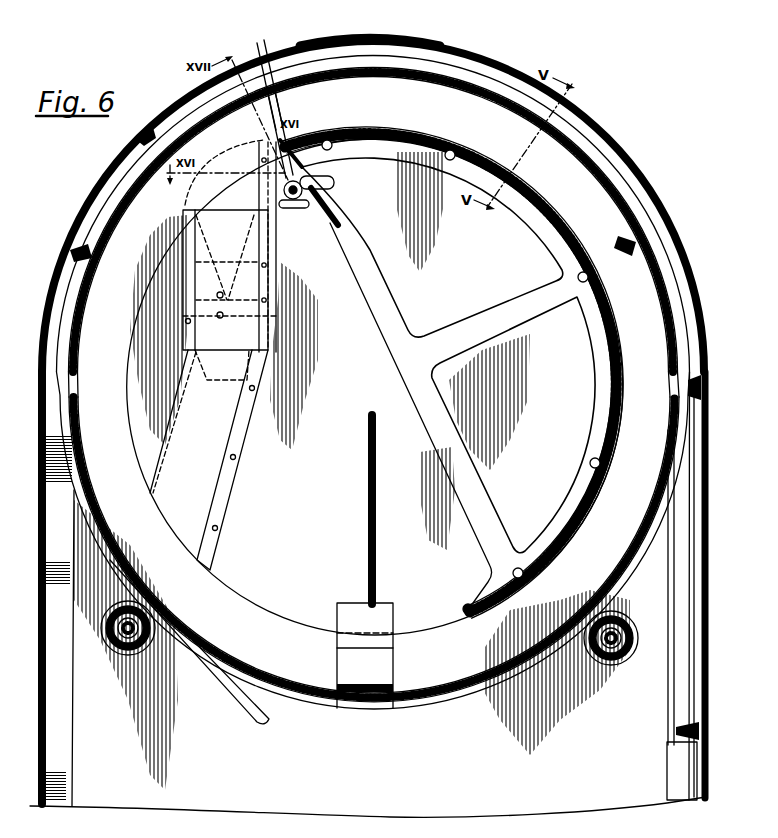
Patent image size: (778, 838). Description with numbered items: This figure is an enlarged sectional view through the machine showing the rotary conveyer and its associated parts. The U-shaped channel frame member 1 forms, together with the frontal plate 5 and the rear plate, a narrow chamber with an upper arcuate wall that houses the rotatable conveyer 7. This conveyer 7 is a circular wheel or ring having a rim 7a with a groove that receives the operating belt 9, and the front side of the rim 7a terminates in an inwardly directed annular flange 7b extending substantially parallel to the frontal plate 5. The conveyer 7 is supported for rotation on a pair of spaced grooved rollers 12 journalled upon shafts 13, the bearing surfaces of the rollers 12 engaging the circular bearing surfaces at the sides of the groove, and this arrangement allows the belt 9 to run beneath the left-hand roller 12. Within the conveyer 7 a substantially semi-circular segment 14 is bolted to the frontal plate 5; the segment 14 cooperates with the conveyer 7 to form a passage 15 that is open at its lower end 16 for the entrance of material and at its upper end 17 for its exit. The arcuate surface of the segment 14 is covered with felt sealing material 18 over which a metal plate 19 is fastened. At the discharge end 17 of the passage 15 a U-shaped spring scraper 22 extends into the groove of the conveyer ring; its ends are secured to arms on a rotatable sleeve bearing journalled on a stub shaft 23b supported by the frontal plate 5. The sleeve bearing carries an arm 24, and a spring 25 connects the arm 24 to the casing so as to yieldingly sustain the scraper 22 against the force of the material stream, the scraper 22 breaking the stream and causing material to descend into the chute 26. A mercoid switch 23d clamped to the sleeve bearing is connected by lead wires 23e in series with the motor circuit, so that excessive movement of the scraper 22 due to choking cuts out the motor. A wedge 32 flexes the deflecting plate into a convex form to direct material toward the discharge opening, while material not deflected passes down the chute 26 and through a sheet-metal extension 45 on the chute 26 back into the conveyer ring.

The U-shaped channel frame member 1 is at (708, 581).
The frontal plate 5 is at (414, 808).
The rotatable conveyer 7 is at (411, 693).
The rim 7a is at (392, 66).
The annular flange 7b is at (240, 615).
The operating belt 9 is at (222, 688).
The rollers 12 is at (146, 650).
The shafts 13 is at (122, 625).
The semi-circular segment 14 is at (533, 210).
The passage 15 is at (633, 247).
The lower end of passage 16 is at (457, 668).
The upper end of passage 17 is at (267, 110).
The sealing material 18 is at (590, 498).
The metal plate 19 is at (623, 367).
The scraper 22 is at (270, 104).
The stub shaft 23b is at (313, 183).
The mercoid switch 23d is at (293, 209).
The lead wires 23e is at (270, 240).
The arm 24 is at (312, 178).
The spring 25 is at (333, 206).
The chute 26 is at (200, 218).
The wedge 32 is at (187, 246).
The extension 45 is at (205, 478).